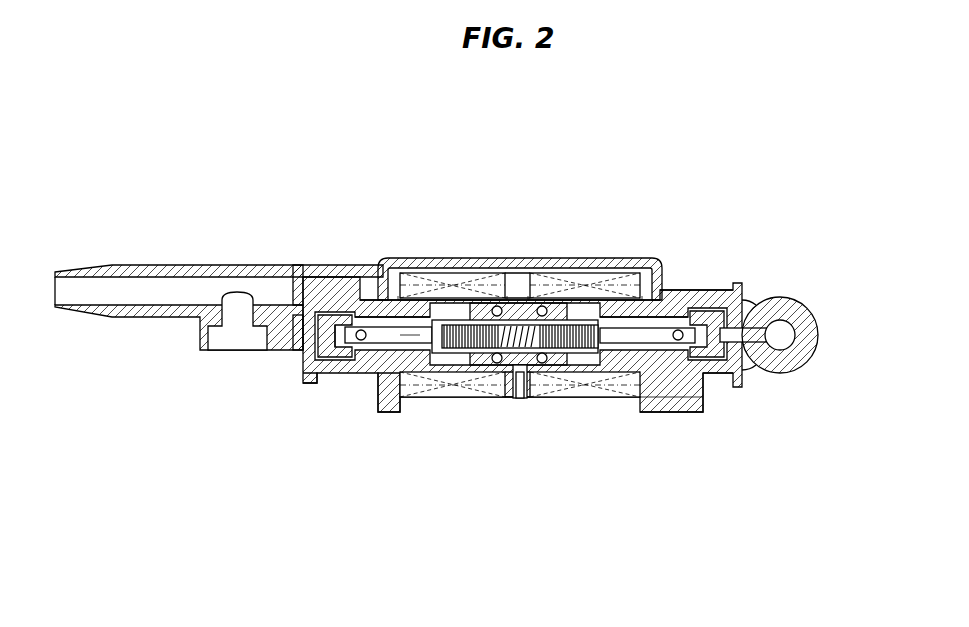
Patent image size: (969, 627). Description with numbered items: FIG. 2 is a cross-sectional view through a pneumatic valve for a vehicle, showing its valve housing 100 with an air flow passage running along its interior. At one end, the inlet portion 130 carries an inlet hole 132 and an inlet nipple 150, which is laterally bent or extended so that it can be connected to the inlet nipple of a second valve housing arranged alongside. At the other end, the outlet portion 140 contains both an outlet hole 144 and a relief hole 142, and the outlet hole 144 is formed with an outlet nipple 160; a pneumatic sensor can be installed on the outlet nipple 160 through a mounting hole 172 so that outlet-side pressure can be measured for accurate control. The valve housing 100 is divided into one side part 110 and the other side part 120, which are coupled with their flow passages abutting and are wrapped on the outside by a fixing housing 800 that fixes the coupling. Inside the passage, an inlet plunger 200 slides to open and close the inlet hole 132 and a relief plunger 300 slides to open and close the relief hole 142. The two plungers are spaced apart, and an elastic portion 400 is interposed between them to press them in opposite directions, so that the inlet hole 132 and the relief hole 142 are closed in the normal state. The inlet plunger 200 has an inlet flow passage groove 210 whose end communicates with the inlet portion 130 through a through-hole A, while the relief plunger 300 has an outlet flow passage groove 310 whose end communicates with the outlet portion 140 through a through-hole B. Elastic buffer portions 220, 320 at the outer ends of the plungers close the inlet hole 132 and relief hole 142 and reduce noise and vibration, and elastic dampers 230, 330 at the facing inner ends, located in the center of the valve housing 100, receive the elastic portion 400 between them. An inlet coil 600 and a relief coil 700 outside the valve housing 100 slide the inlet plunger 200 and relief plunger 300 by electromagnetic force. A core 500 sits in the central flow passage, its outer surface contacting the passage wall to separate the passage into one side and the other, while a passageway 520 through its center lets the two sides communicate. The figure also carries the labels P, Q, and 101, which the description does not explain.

The valve housing 100 is at (334, 482).
The outlet nipple 160 is at (162, 264).
The mounting hole 172 is at (228, 334).
The relief plunger 300 is at (379, 298).
The relief hole 142 is at (300, 340).
The outlet hole 144 is at (295, 265).
The outlet portion 140 is at (305, 386).
The one side part 110 is at (389, 414).
The outlet flow passage groove 310 is at (404, 300).
The inlet plunger 200 is at (665, 290).
The fixing housing 800 is at (455, 276).
The relief coil 700 is at (498, 276).
The inlet coil 600 is at (610, 282).
The port P is at (474, 290).
The damper 230 is at (594, 385).
The port Q is at (628, 380).
The buffer portion 320 is at (330, 312).
The damper 330 is at (430, 345).
The through-hole B is at (357, 346).
The core 500 is at (530, 302).
The passageway 520 is at (492, 366).
The elastic portion 400 is at (516, 400).
The pin slot 101 is at (531, 398).
The buffer portion 220 is at (715, 292).
The inlet flow passage groove 210 is at (651, 412).
The other side part 120 is at (690, 405).
The through-hole A is at (706, 385).
The inlet portion 130 is at (741, 386).
The inlet nipple 150 is at (796, 364).
The inlet hole 132 is at (753, 300).